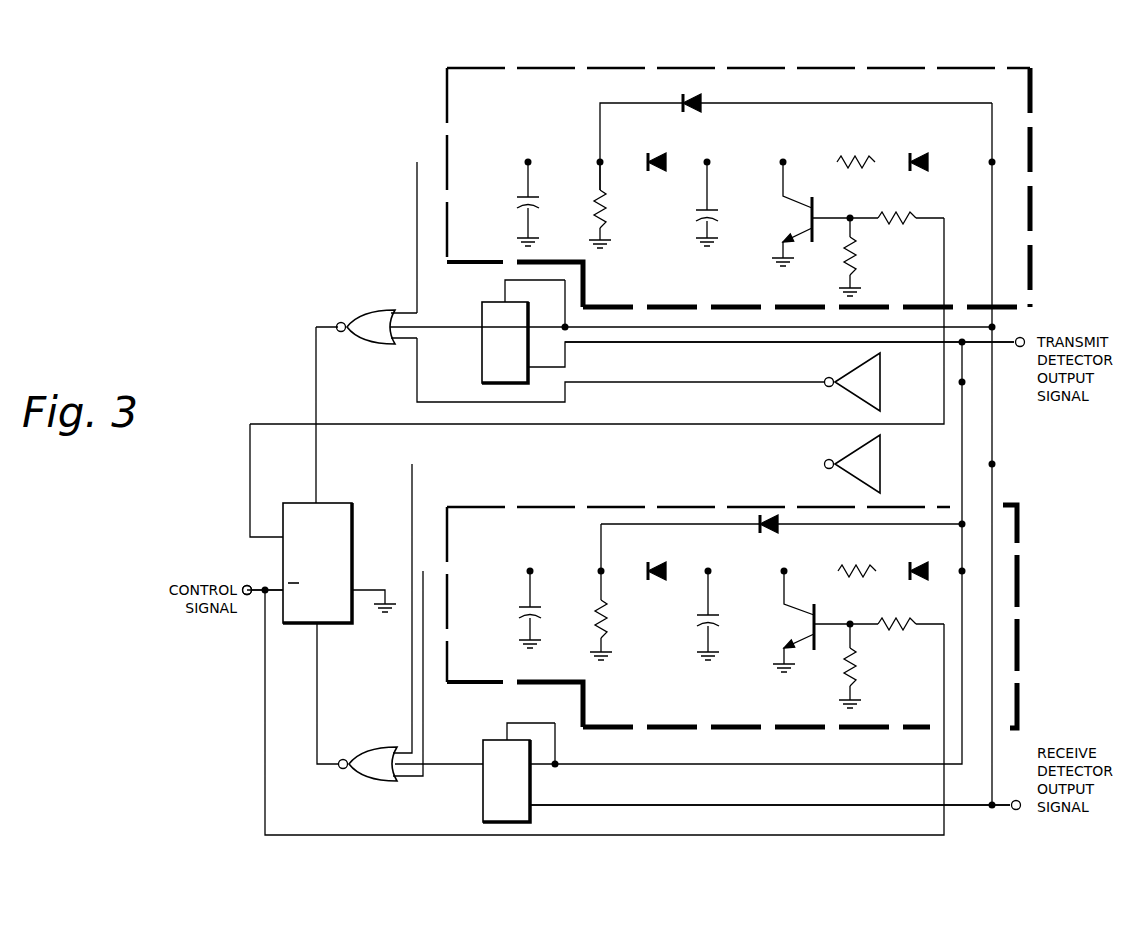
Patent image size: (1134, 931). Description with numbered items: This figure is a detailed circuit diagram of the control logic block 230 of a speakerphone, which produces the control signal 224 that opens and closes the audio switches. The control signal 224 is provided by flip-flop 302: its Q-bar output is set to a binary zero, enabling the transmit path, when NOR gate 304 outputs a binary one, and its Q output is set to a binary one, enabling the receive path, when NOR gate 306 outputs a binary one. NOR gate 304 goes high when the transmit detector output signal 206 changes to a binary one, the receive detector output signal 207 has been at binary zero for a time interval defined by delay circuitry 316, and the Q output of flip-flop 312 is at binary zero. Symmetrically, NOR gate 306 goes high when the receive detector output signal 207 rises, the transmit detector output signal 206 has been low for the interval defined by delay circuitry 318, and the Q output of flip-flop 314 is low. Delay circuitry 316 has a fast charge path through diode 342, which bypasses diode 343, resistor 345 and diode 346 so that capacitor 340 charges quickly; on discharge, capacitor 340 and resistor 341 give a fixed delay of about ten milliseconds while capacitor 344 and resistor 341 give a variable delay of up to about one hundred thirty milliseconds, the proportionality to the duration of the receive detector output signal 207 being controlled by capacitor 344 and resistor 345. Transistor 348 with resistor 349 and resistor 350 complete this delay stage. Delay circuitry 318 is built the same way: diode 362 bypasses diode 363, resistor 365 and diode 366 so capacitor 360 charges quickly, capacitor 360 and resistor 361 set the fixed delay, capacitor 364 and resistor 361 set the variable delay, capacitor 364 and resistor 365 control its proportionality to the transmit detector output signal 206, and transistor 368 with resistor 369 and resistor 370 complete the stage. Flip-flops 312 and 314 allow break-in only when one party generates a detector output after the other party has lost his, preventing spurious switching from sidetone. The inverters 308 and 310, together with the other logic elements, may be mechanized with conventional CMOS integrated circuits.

The control logic block 230 is at (270, 216).
The flip-flop 302 is at (355, 521).
The NOR gate 304 is at (373, 310).
The NOR gate 306 is at (375, 782).
The logic circuit element 308 is at (848, 398).
The logic circuit element 310 is at (888, 456).
The flip-flop 312 is at (478, 354).
The flip-flop 314 is at (479, 806).
The delay circuitry 316 is at (1032, 146).
The delay circuitry 318 is at (1019, 592).
The capacitor 340 is at (516, 204).
The resistor 341 is at (607, 211).
The diode 342 is at (701, 108).
The diode 343 is at (667, 157).
The capacitor 344 is at (697, 214).
The resistor 345 is at (855, 157).
The diode 346 is at (925, 152).
The transistor 348 is at (780, 222).
The resistor 349 is at (858, 258).
The resistor 350 is at (896, 211).
The capacitor 360 is at (518, 613).
The resistor 361 is at (608, 617).
The diode 362 is at (769, 535).
The diode 363 is at (667, 571).
The capacitor 364 is at (698, 623).
The resistor 365 is at (855, 566).
The diode 366 is at (923, 565).
The transistor 368 is at (781, 630).
The resistor 369 is at (858, 672).
The resistor 370 is at (896, 632).
The transmit detector output signal 206 is at (820, 382).
The receive detector output signal 207 is at (802, 819).
The control signal 224 is at (238, 610).